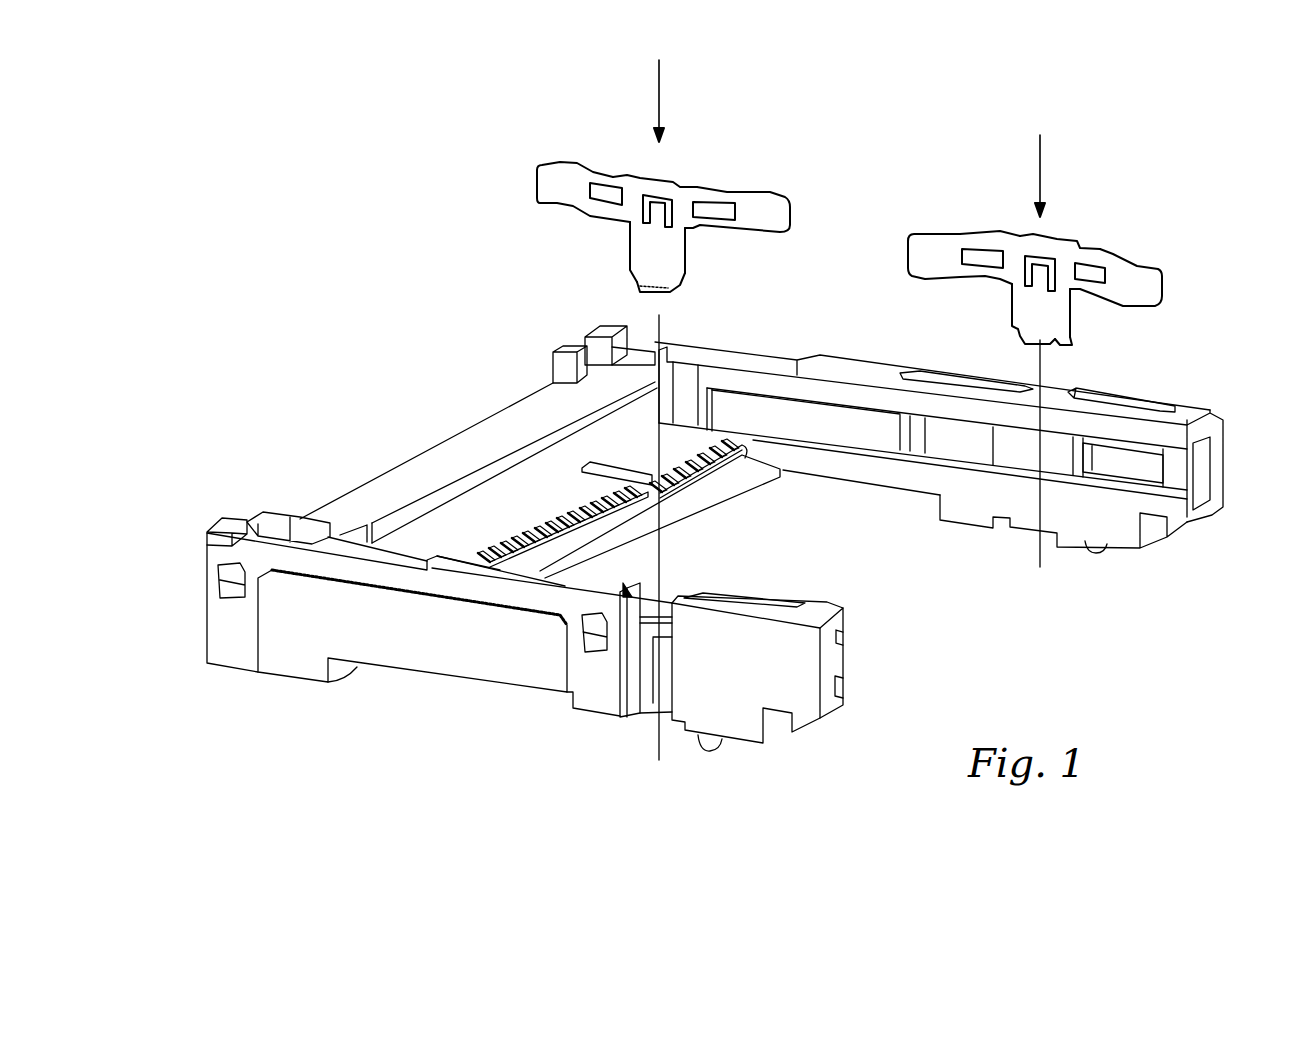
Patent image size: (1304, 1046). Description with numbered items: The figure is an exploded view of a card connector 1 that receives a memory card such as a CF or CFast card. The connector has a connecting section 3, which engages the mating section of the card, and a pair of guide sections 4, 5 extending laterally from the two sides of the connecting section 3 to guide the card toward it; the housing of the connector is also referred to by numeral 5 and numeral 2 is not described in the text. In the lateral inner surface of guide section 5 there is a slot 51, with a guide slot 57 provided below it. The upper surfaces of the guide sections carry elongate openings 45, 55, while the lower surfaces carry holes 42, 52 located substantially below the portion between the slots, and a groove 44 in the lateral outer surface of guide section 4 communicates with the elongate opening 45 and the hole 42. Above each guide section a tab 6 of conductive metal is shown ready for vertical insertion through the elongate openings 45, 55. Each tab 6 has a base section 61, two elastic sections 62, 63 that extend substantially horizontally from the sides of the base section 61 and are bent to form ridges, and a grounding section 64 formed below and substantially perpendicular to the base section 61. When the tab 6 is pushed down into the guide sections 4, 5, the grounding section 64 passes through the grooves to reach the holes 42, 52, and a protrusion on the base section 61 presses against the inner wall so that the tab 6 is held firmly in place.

The card connector 1 is at (743, 412).
The insulative housing 2 is at (708, 521).
The connecting section 3 is at (695, 447).
The guide section 4 is at (793, 675).
The hole 42 is at (647, 727).
The groove 44 is at (647, 669).
The elongate opening 45 is at (530, 590).
The guide section 5 is at (1216, 426).
The slot 51 is at (1147, 466).
The hole 52 is at (1020, 532).
The elongate opening 55 is at (1122, 402).
The guide slot 57 is at (852, 428).
The tab 6 is at (836, 208).
The base section 61 is at (650, 248).
The elastic section 62 is at (765, 199).
The elastic section 63 is at (557, 167).
The grounding section 64 is at (632, 286).